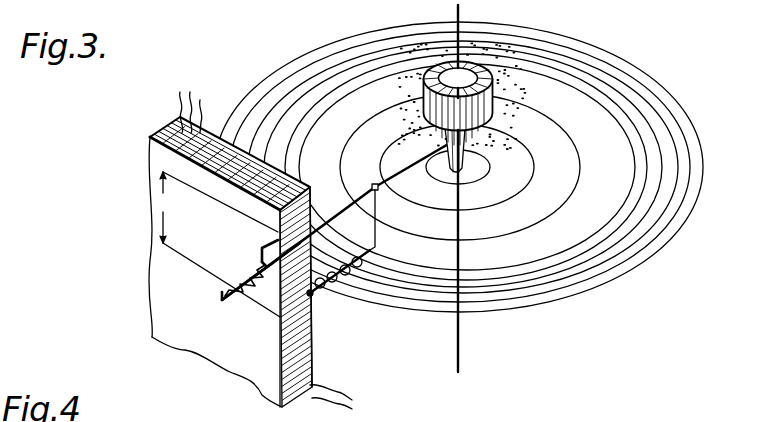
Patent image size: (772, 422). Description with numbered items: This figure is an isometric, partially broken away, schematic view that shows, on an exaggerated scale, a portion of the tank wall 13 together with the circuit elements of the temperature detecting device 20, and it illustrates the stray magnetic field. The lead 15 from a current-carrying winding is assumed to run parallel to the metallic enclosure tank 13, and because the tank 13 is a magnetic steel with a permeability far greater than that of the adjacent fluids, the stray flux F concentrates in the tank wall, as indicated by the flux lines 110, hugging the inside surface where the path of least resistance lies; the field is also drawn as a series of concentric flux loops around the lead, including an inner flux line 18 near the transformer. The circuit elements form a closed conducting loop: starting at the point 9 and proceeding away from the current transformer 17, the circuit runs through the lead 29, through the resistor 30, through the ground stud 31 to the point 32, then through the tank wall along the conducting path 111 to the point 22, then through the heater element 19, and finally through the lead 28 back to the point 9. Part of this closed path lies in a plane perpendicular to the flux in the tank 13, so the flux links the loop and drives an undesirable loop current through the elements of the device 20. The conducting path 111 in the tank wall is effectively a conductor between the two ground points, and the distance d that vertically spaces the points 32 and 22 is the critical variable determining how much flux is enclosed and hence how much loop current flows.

The point 9 is at (345, 210).
The tank wall 13 is at (252, 367).
The lead 15 is at (460, 342).
The current transformer 17 is at (498, 97).
The inner field line 18 is at (384, 155).
The heater element 19 is at (340, 290).
The temperature detecting device 20 is at (218, 288).
The point 22 is at (312, 302).
The lead 28 is at (377, 242).
The lead 29 is at (311, 187).
The resistor 30 is at (250, 273).
The ground stud 31 is at (262, 246).
The point 32 is at (270, 222).
The flux lines 110 is at (279, 243).
The conducting path 111 is at (312, 330).
The stray flux F is at (563, 130).
The distance d is at (163, 207).